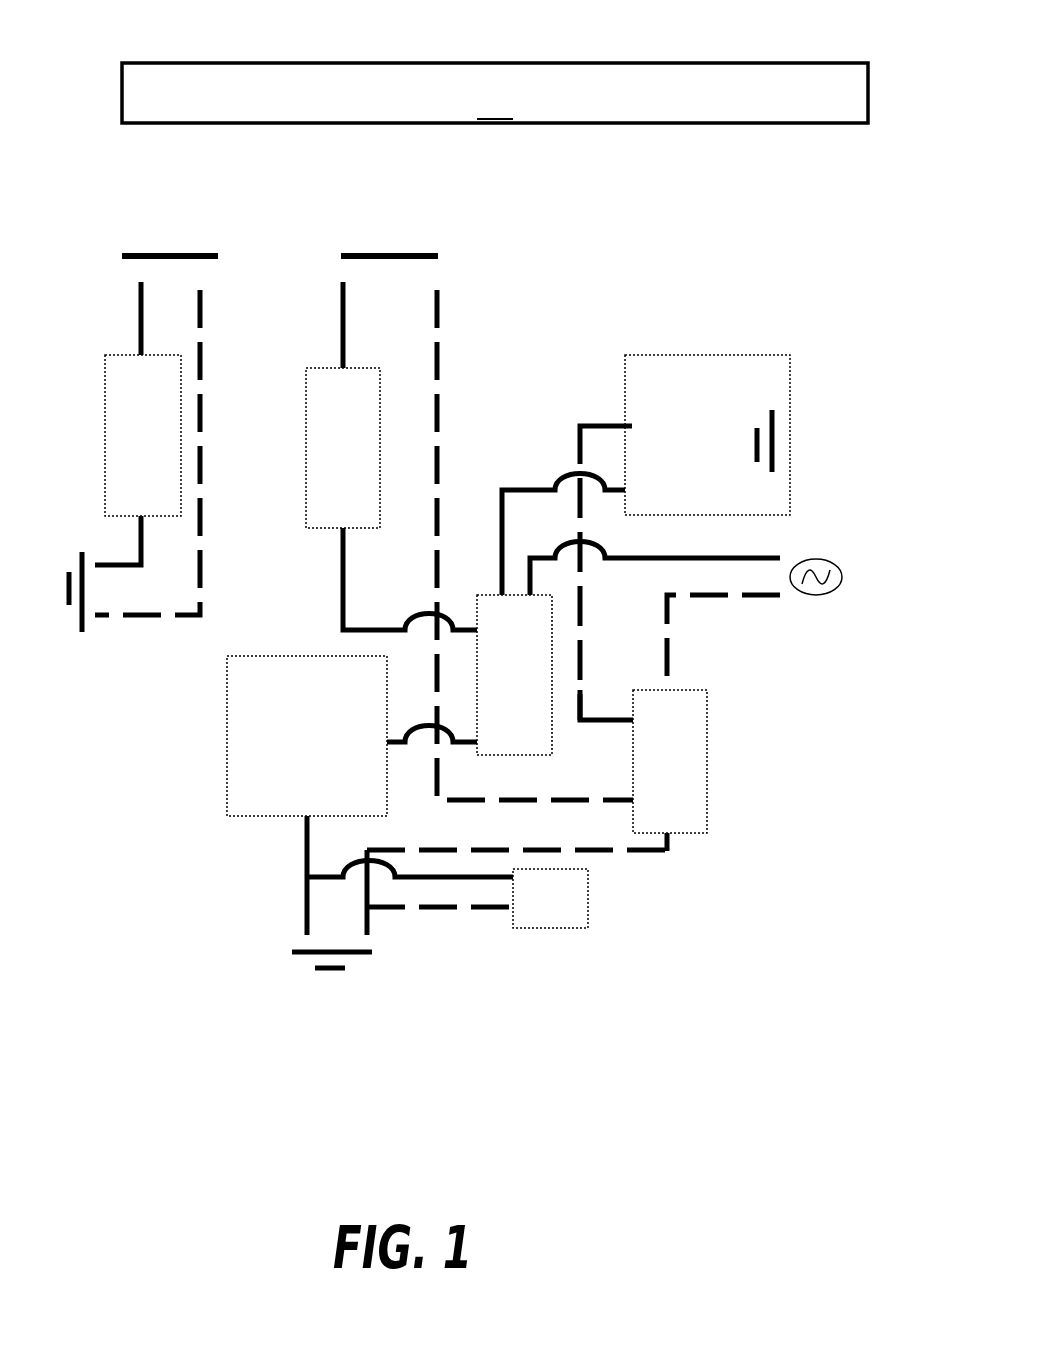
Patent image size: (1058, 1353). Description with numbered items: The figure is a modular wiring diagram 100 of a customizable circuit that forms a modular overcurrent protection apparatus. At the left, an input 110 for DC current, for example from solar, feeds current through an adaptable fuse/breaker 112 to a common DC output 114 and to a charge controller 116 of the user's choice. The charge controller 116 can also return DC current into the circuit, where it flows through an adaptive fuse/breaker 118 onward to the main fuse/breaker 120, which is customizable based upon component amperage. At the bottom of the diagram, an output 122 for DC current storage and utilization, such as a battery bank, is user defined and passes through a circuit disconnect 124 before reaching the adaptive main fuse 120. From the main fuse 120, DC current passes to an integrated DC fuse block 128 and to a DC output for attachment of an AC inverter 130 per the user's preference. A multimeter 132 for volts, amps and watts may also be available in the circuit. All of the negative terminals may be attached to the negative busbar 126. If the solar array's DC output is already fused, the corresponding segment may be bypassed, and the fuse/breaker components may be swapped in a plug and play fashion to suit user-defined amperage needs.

The wiring diagram 100 is at (568, 63).
The input 110 is at (38, 701).
The adaptable fuse/breaker 112 is at (122, 468).
The common DC output 114 is at (145, 231).
The charge controller 116 is at (370, 231).
The adaptive fuse/breaker 118 is at (320, 469).
The main fuse/breaker 120 is at (491, 695).
The output 122 is at (300, 1035).
The circuit disconnect 124 is at (276, 768).
The negative busbar 126 is at (652, 780).
The integrated DC fuse block 128 is at (667, 436).
The AC inverter 130 is at (867, 595).
The multimeter 132 is at (529, 910).